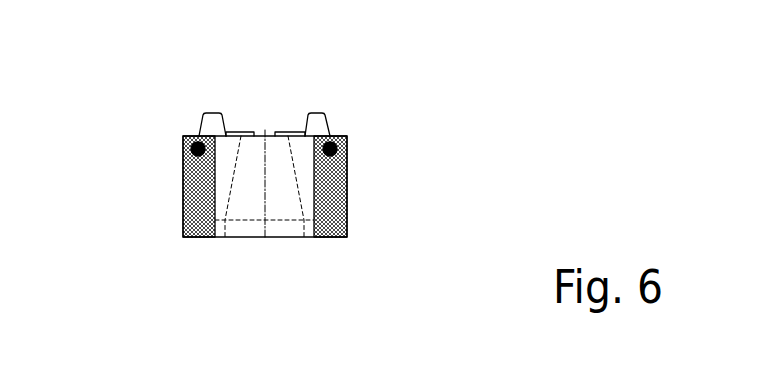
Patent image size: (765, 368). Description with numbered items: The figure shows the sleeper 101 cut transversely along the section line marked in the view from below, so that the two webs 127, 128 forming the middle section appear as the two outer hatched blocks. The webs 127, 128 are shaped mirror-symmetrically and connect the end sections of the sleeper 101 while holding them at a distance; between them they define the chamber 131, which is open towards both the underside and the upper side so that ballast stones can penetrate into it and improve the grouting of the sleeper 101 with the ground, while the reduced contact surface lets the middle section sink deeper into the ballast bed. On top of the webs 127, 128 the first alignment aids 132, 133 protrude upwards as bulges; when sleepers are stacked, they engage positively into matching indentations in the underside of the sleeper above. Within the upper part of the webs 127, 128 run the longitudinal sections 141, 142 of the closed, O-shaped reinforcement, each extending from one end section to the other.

The sleeper 101 is at (173, 115).
The web 127 is at (198, 186).
The web 128 is at (330, 185).
The chamber 131 is at (267, 190).
The alignment aid 132 is at (210, 118).
The alignment aid 133 is at (318, 112).
The longitudinal section of the reinforcement 141 is at (191, 148).
The longitudinal section of the reinforcement 142 is at (340, 151).